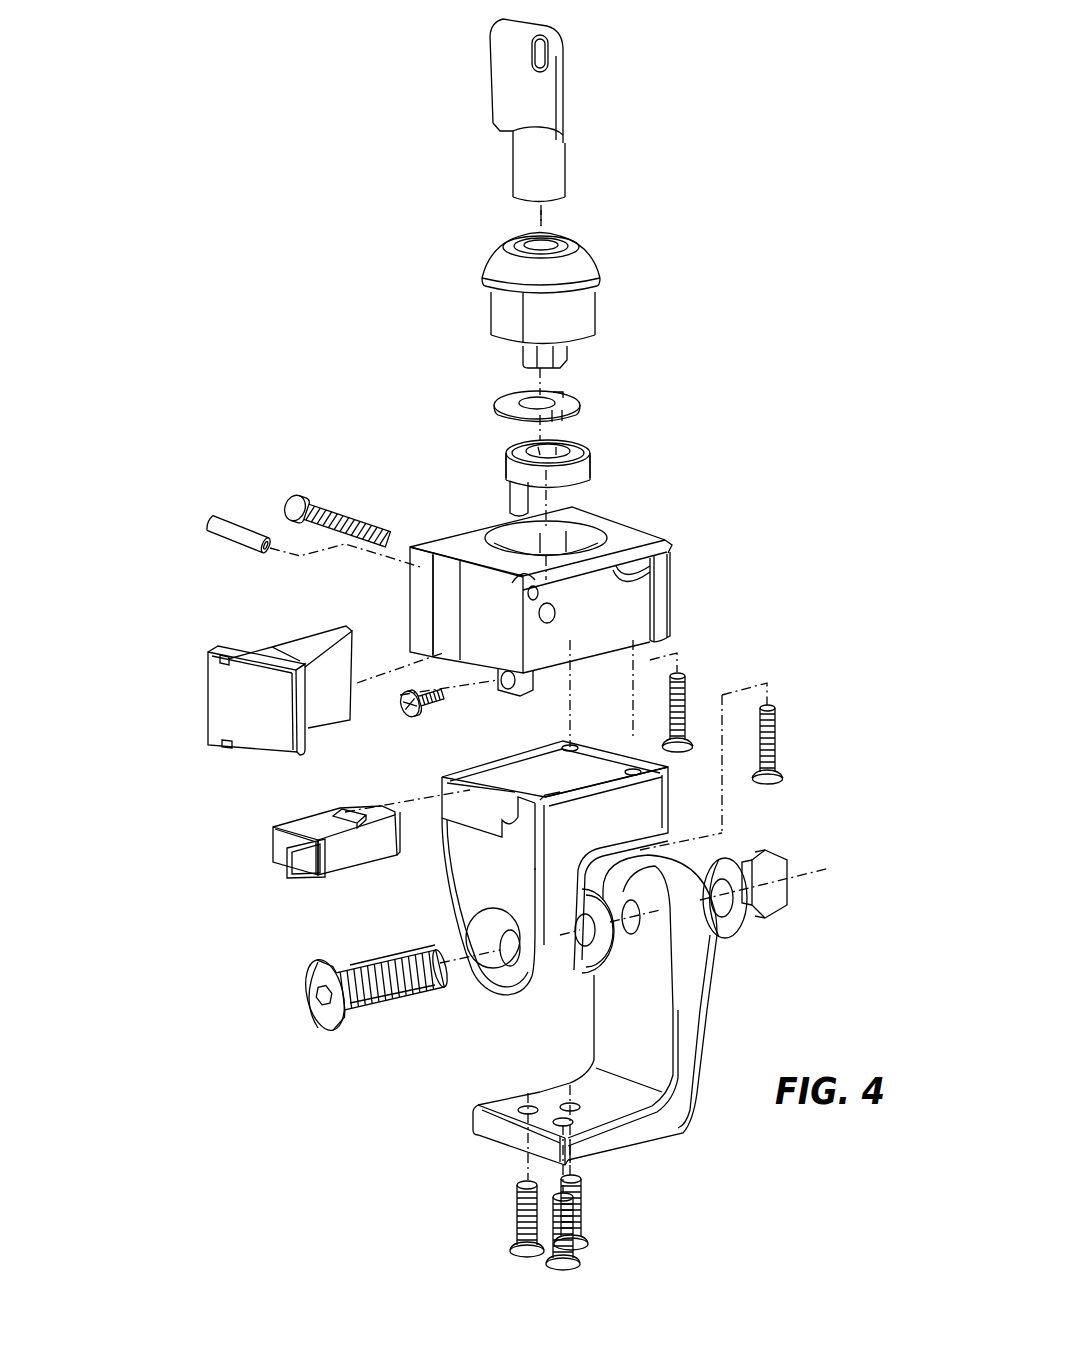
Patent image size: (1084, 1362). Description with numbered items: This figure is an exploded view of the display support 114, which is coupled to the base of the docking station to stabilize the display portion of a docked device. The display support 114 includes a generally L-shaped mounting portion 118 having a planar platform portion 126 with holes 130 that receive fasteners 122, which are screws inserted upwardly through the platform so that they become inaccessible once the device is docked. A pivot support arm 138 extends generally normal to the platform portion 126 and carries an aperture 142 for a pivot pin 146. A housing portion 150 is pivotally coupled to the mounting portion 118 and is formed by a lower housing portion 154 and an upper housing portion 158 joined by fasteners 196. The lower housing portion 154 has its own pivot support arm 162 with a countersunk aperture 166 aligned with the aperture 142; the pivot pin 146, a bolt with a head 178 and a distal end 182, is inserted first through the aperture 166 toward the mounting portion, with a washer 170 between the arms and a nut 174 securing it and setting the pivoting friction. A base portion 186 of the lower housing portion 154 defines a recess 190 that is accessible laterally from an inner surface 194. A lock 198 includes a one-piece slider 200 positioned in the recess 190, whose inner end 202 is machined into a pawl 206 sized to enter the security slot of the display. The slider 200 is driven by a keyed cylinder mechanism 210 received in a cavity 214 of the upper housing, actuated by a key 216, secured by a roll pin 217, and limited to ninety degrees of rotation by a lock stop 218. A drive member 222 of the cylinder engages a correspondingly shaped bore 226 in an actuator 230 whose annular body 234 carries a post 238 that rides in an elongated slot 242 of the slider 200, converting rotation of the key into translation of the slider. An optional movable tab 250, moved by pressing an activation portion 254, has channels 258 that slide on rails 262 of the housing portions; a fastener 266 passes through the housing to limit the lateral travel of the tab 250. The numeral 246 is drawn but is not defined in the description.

The display support 114 is at (288, 332).
The mounting portion 118 is at (688, 1120).
The fasteners 122 is at (572, 1235).
The platform portion 126 is at (470, 1115).
The holes 130 is at (561, 1119).
The pivot support arm 138 is at (700, 1013).
The aperture 142 is at (642, 918).
The pivot pin 146 is at (373, 960).
The housing portion 150 is at (235, 925).
The lower housing portion 154 is at (673, 822).
The upper housing portion 158 is at (640, 537).
The pivot support arm 162 is at (533, 1003).
The aperture 166 is at (482, 942).
The washer 170 is at (587, 963).
The nut 174 is at (780, 893).
The head 178 is at (313, 1010).
The distal end 182 is at (450, 990).
The base portion 186 is at (645, 795).
The recess 190 is at (476, 790).
The inner surface 194 is at (462, 860).
The fasteners 196 is at (427, 708).
The lock 198 is at (598, 227).
The slider 200 is at (373, 813).
The inner end 202 is at (278, 838).
The pawl 206 is at (280, 870).
The keyed cylinder mechanism 210 is at (510, 310).
The cavity 214 is at (580, 530).
The key 216 is at (527, 168).
The roll pin 217 is at (233, 528).
The lock stop 218 is at (505, 400).
The drive member 222 is at (565, 355).
The bore 226 is at (565, 447).
The actuator 230 is at (505, 465).
The annular body 234 is at (517, 470).
The post 238 is at (517, 503).
The slot 242 is at (333, 818).
The housing side wall 246 is at (420, 597).
The movable tab 250 is at (208, 698).
The activation portion 254 is at (243, 710).
The channels 258 is at (263, 645).
The rails 262 is at (655, 580).
The fastener 266 is at (297, 497).